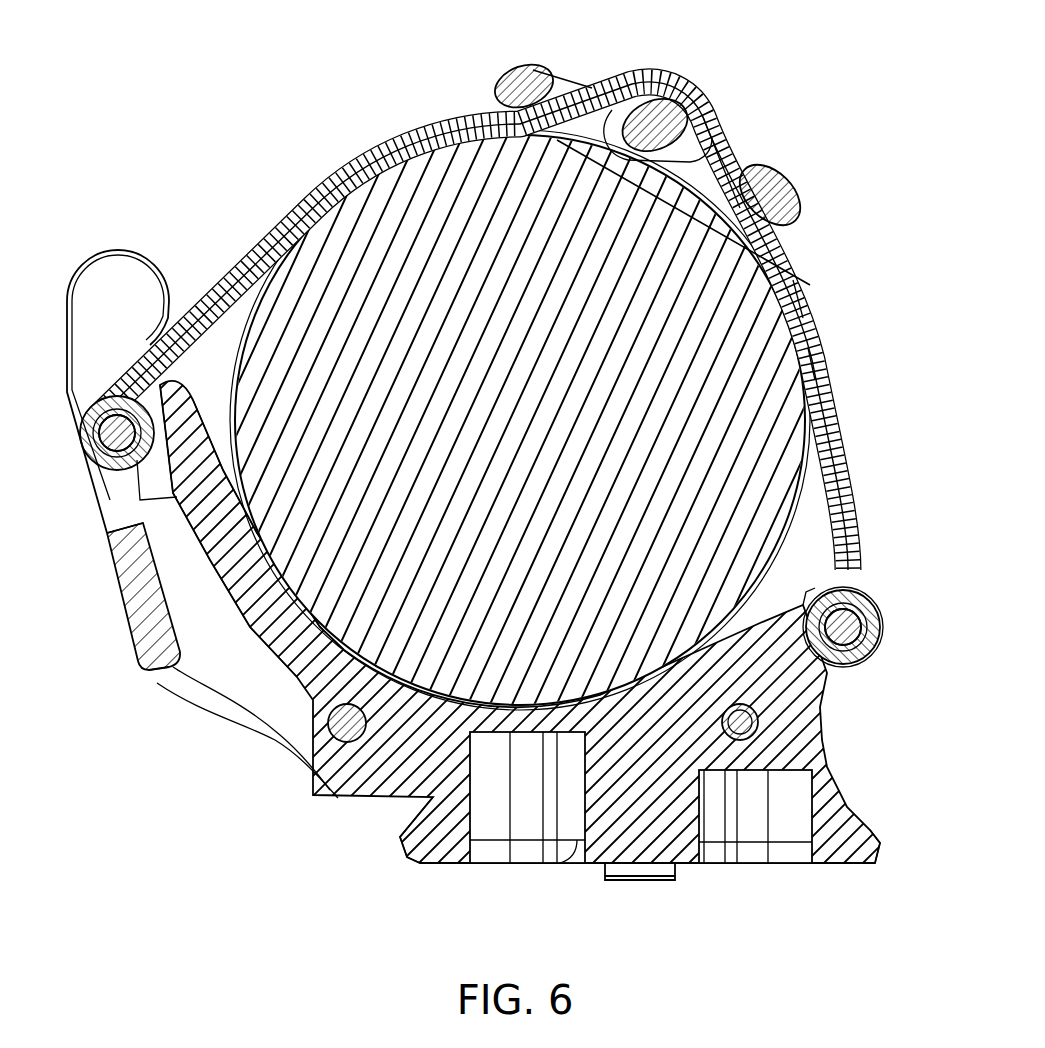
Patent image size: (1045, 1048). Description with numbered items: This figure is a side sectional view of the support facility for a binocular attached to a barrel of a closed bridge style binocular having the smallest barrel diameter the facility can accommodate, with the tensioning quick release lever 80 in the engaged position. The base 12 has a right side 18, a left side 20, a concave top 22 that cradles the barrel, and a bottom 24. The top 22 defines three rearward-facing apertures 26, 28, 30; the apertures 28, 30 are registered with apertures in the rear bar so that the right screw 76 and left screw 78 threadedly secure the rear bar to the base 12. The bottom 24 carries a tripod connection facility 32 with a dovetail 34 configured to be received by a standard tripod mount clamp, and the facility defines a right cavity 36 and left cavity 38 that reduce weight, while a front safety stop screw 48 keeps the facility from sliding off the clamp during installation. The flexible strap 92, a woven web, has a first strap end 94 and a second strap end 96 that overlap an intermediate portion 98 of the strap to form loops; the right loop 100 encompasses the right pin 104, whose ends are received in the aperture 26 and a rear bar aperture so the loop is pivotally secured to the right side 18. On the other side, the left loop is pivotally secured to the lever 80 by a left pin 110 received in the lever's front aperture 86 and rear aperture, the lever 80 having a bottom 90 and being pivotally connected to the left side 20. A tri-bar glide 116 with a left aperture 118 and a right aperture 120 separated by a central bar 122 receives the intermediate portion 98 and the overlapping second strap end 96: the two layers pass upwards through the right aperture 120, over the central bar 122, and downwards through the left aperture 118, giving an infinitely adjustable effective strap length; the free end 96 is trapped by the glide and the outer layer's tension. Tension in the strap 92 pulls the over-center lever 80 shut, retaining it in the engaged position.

The base 12 is at (826, 705).
The right side 18 is at (868, 608).
The left side 20 is at (143, 523).
The top 22 is at (405, 742).
The bottom 24 is at (432, 860).
The rearward-facing aperture 26 is at (880, 628).
The rearward-facing aperture 28 is at (760, 722).
The rearward-facing aperture 30 is at (352, 742).
The tripod connection facility 32 is at (858, 851).
The dovetail 34 is at (882, 845).
The right cavity 36 is at (706, 805).
The left cavity 38 is at (480, 792).
The front safety stop screw 48 is at (640, 882).
The right screw 76 is at (755, 732).
The left screw 78 is at (325, 775).
The tensioning quick release lever 80 is at (134, 594).
The front aperture 86 is at (96, 436).
The bottom 90 is at (165, 670).
The flexible strap 92 is at (334, 175).
The first strap end 94 is at (818, 372).
The second strap end 96 is at (808, 328).
The intermediate portion 98 is at (702, 78).
The right loop 100 is at (828, 658).
The right pin 104 is at (850, 640).
The left pin 110 is at (120, 462).
The tri-bar glide 116 is at (740, 154).
The left aperture 118 is at (762, 178).
The right aperture 120 is at (545, 70).
The central bar 122 is at (662, 98).